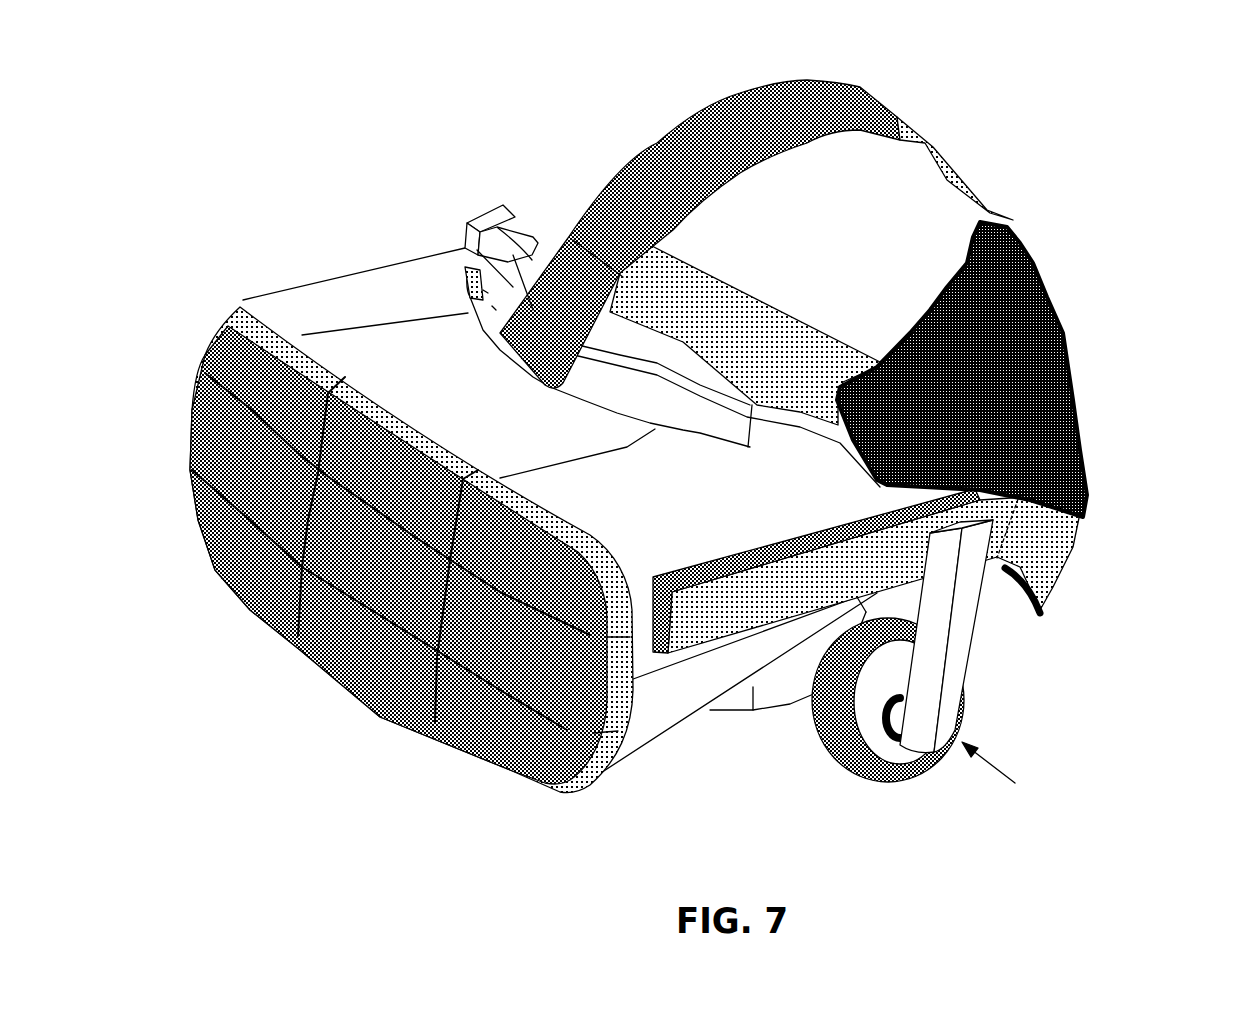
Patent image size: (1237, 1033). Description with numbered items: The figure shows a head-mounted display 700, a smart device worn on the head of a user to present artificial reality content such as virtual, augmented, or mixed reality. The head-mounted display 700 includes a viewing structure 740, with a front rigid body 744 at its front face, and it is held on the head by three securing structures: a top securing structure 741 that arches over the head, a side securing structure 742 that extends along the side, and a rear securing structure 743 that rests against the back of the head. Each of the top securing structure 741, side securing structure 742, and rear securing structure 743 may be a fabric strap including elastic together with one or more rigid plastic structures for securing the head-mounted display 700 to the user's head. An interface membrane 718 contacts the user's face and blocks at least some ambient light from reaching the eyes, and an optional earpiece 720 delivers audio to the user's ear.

The head-mounted display 700 is at (701, 423).
The interface membrane 718 is at (533, 230).
The earpiece 720 is at (934, 664).
The viewing structure 740 is at (430, 306).
The top securing structure 741 is at (867, 97).
The side securing structure 742 is at (740, 288).
The rear securing structure 743 is at (1067, 310).
The front rigid body 744 is at (398, 579).